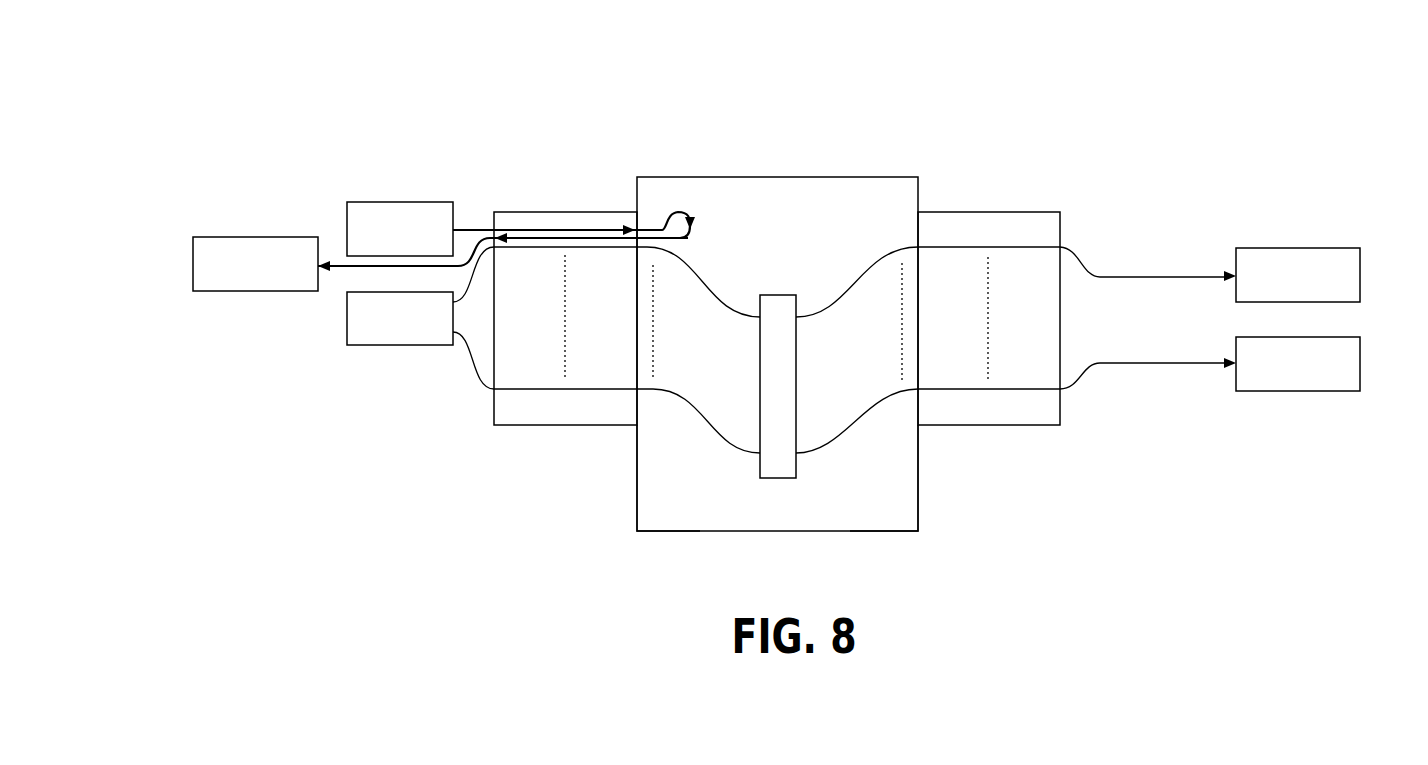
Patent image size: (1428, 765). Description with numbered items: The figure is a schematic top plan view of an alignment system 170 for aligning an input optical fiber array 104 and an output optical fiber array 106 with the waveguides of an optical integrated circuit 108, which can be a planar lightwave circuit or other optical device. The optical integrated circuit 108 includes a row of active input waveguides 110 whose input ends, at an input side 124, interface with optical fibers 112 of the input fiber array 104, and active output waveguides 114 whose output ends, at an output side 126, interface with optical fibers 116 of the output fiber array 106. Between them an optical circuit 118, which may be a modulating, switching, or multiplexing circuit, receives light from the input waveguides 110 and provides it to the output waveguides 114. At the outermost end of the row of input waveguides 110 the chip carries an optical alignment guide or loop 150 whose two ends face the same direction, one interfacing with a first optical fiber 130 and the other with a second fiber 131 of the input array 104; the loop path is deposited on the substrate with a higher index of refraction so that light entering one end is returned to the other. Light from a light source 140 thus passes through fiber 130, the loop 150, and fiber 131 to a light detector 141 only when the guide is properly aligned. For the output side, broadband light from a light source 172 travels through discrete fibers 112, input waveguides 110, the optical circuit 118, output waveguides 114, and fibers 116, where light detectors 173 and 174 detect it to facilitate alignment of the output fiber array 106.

The input optical fiber array 104 is at (625, 212).
The output optical fiber array 106 is at (932, 212).
The optical integrated circuit 108 is at (813, 177).
The active input waveguides 110 is at (702, 283).
The optical fibers 112 is at (568, 260).
The active output waveguides 114 is at (800, 317).
The optical fibers 116 is at (982, 248).
The optical circuit 118 is at (760, 342).
The input side 124 is at (637, 512).
The output side 126 is at (918, 512).
The first optical fiber 130 is at (561, 229).
The second fiber 131 is at (561, 240).
The light source 140 is at (373, 202).
The light detector 141 is at (225, 237).
The optical alignment guide or loop 150 is at (705, 200).
The alignment system 170 is at (454, 62).
The light source 172 is at (370, 345).
The light detector 173 is at (1345, 248).
The light detector 174 is at (1345, 391).